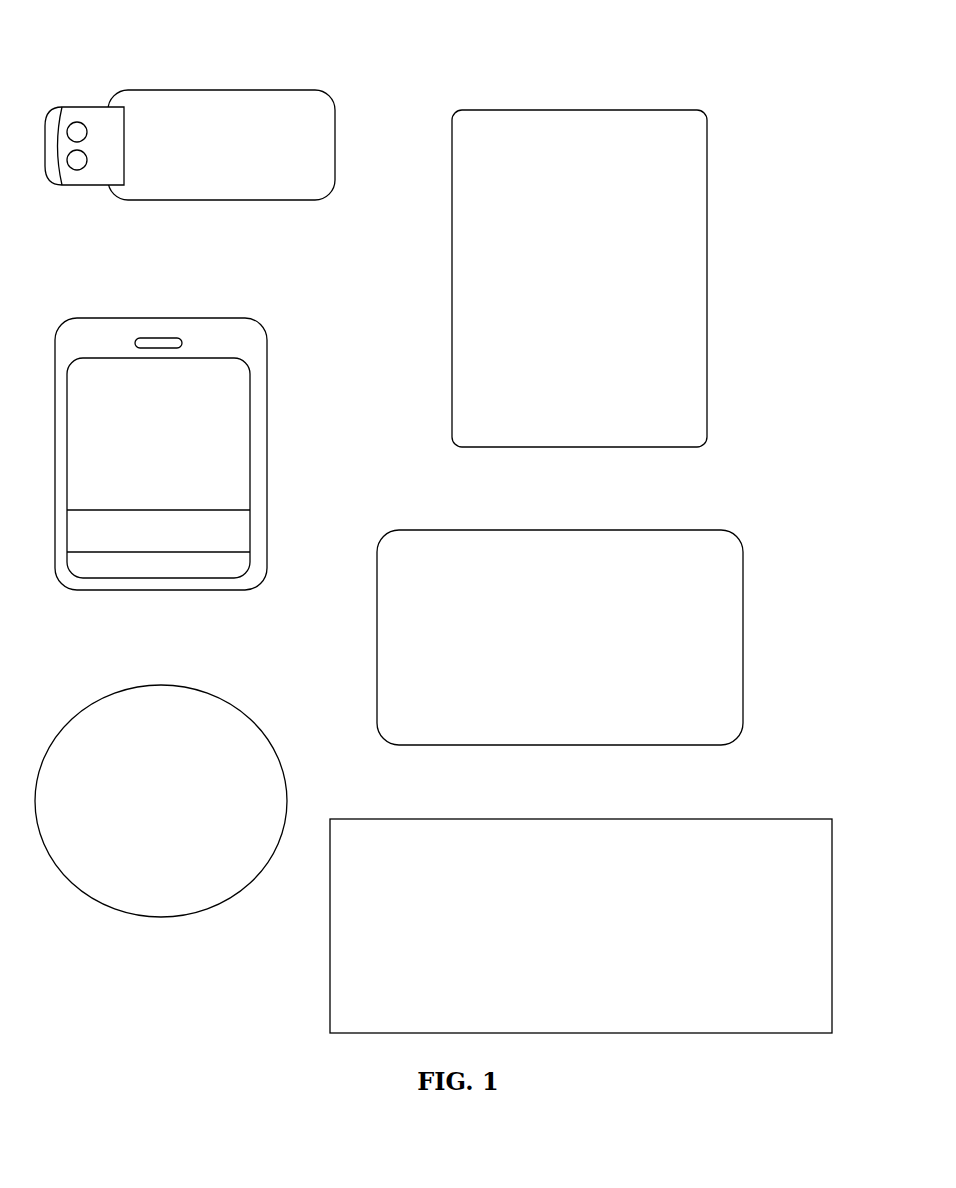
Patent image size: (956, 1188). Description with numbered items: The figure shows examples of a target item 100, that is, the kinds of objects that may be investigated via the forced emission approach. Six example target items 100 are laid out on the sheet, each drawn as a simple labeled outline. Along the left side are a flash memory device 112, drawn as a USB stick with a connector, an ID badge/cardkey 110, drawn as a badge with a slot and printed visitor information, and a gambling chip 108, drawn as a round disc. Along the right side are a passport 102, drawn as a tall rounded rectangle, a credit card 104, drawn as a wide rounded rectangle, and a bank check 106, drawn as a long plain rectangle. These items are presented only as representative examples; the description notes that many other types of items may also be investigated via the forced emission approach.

The target item 100 is at (752, 42).
The passport 102 is at (580, 110).
The credit card 104 is at (561, 530).
The bank check 106 is at (581, 819).
The gambling chip 108 is at (161, 686).
The ID badge/cardkey 110 is at (161, 318).
The flash memory device 112 is at (219, 91).